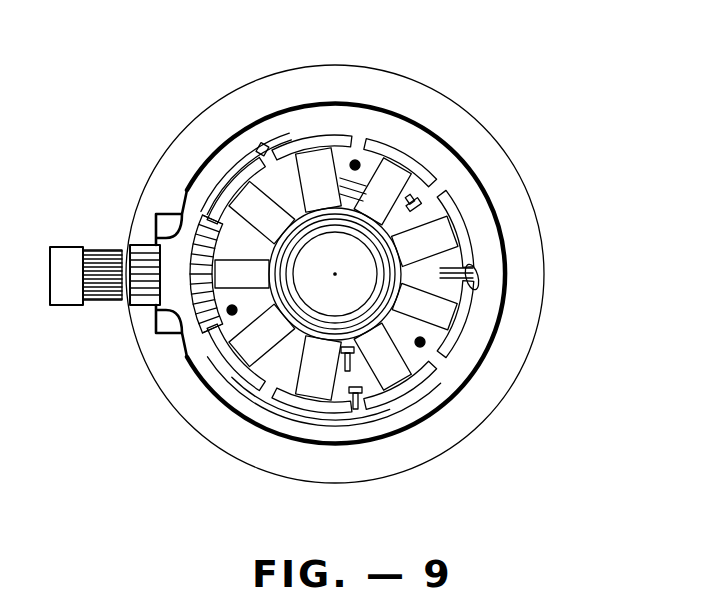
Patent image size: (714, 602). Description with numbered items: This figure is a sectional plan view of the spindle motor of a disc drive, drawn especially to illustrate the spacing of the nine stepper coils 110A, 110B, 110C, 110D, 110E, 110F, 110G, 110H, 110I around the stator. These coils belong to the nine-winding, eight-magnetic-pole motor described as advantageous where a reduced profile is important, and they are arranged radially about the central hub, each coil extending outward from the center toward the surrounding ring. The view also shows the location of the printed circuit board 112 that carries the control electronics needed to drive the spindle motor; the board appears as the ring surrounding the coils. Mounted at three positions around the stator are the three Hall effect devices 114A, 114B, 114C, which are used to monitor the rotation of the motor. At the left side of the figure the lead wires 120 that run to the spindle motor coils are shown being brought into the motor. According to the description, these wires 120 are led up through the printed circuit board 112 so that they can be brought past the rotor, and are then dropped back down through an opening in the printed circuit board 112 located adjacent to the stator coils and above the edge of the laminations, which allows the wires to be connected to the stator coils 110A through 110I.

The stepper coil 110A is at (320, 380).
The stepper coil 110B is at (398, 372).
The stepper coil 110C is at (447, 310).
The stepper coil 110D is at (448, 235).
The stepper coil 110E is at (395, 172).
The stepper coil 110F is at (322, 153).
The stepper coil 110G is at (247, 197).
The stepper coil 110H is at (220, 273).
The stepper coil 110I is at (228, 368).
The printed circuit board 112 is at (462, 195).
The Hall effect device 114A is at (258, 420).
The Hall effect device 114B is at (262, 152).
The Hall effect device 114C is at (473, 272).
The lead wires 120 is at (98, 256).